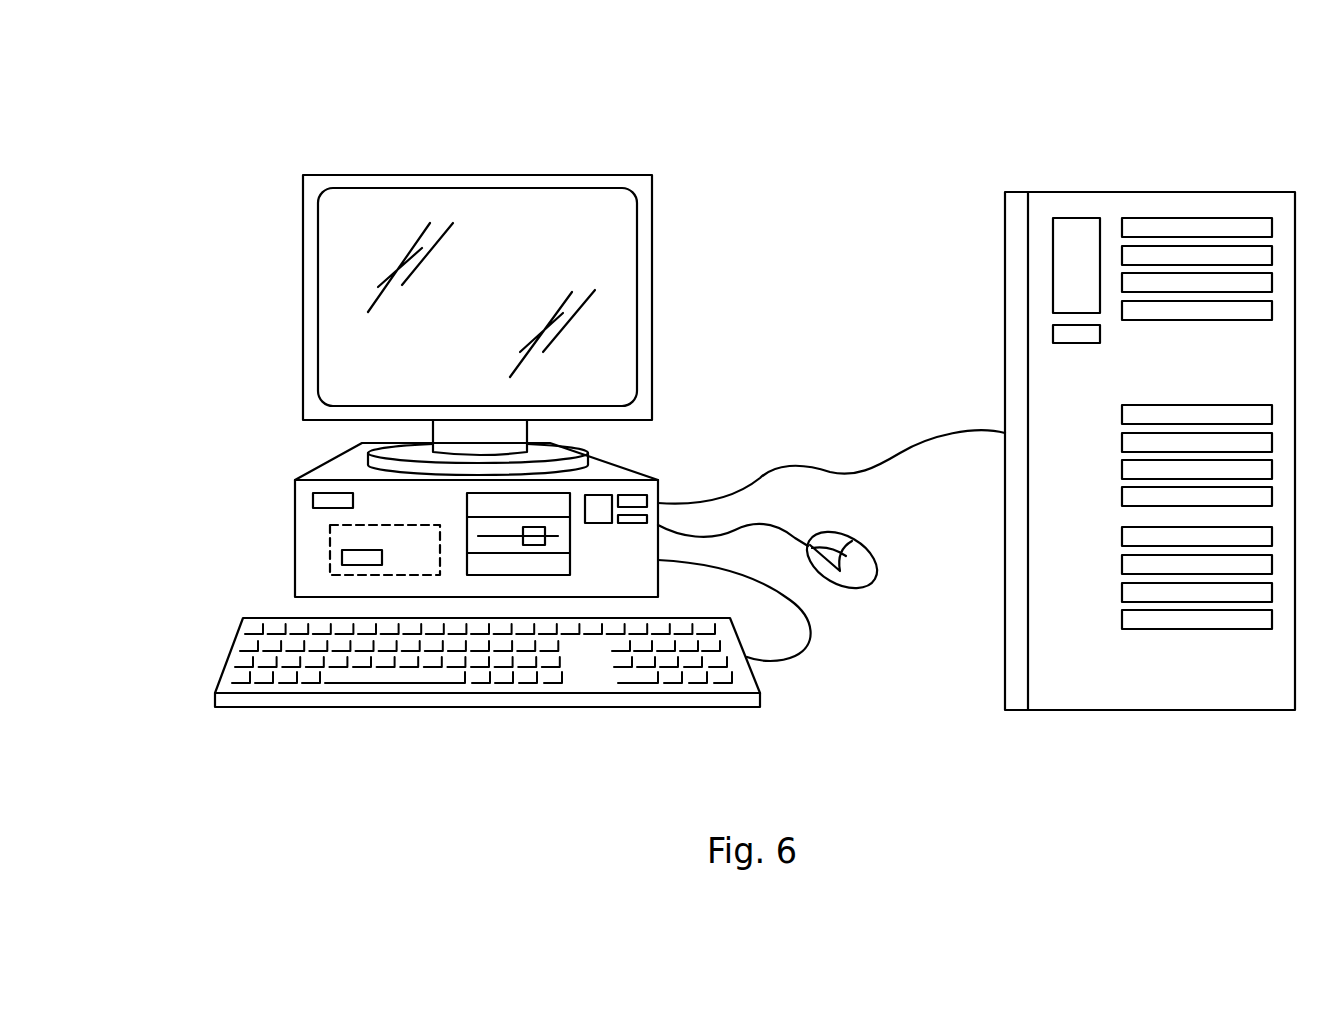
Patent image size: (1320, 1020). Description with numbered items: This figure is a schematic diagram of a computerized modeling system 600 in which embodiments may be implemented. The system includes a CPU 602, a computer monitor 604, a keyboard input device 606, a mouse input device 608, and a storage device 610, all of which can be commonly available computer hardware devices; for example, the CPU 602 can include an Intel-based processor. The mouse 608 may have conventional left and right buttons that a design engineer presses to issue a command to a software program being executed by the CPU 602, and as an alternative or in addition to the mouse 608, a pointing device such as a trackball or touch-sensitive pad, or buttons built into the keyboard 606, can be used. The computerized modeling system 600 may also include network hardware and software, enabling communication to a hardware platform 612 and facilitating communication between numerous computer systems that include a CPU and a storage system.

The computerized modeling system 600 is at (596, 58).
The CPU 602 is at (343, 556).
The computer monitor 604 is at (600, 246).
The keyboard input device 606 is at (228, 650).
The mouse input device 608 is at (857, 588).
The storage device 610 is at (547, 500).
The hardware platform 612 is at (1105, 192).